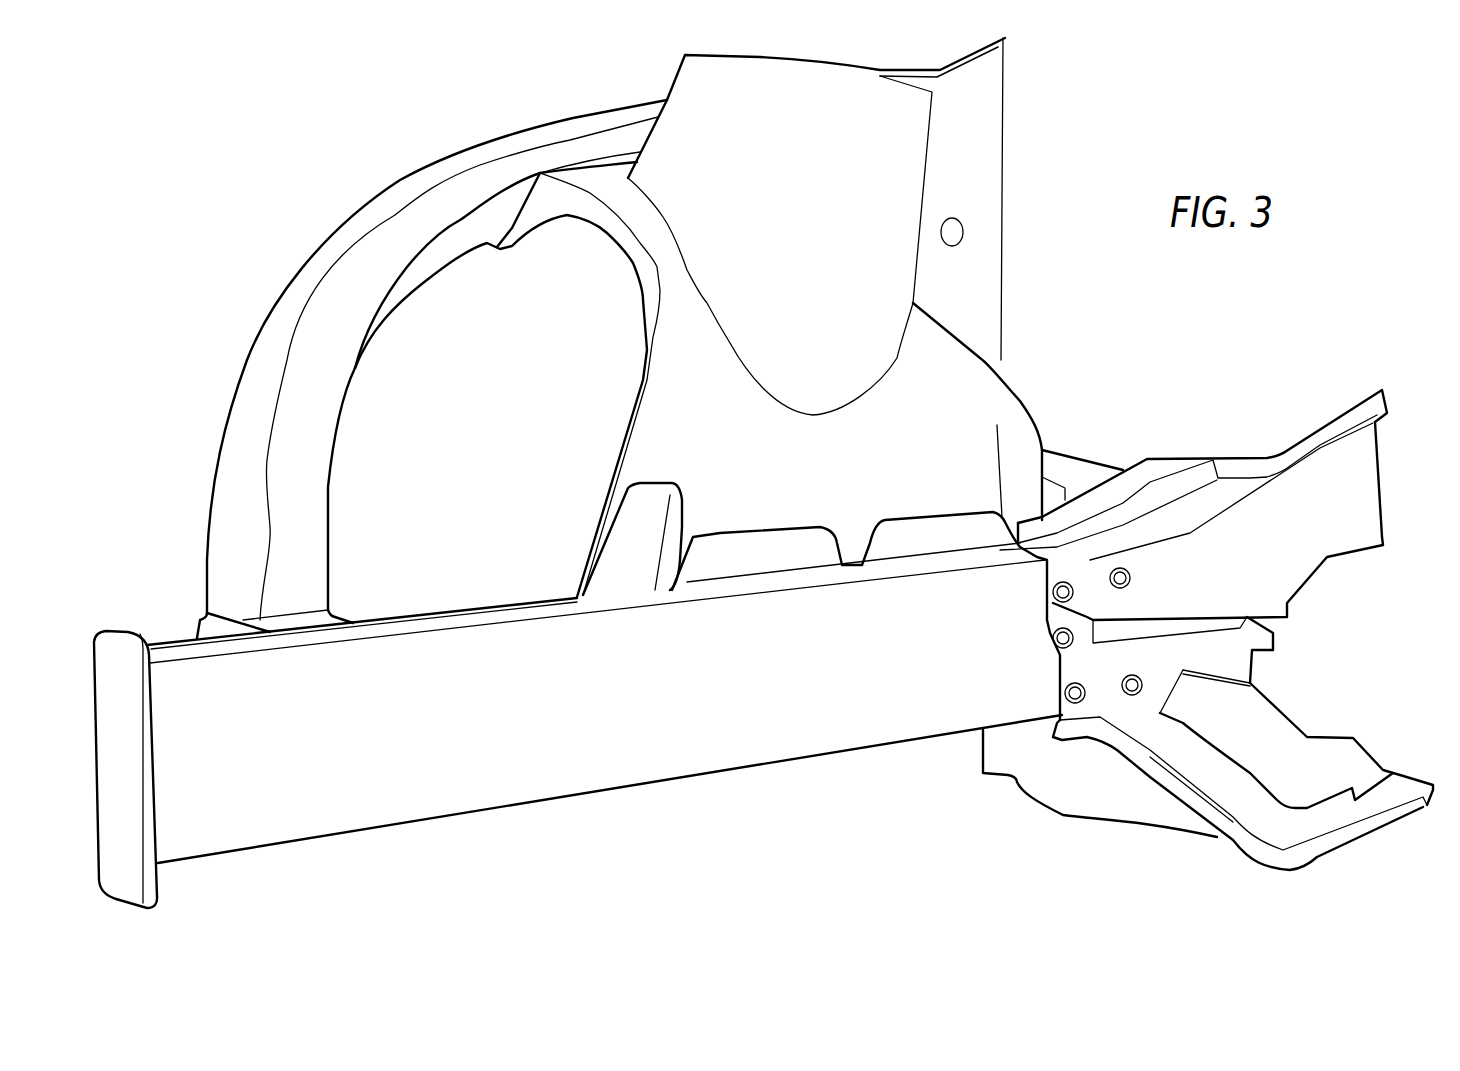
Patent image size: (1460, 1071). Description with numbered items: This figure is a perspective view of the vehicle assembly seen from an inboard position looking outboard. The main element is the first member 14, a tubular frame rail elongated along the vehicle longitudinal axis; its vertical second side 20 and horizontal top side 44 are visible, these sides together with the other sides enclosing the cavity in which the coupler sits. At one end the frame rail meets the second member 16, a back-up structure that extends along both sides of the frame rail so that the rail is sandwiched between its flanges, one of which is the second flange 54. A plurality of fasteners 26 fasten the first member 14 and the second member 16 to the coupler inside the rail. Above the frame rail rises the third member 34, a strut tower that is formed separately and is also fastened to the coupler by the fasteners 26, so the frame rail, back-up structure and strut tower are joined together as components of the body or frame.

The first member 14 is at (703, 775).
The second member 16 is at (1378, 462).
The second side 20 is at (435, 783).
The fastener 26 is at (1065, 580).
The third member 34 is at (452, 154).
The top side 44 is at (183, 647).
The second flange 54 is at (1080, 740).